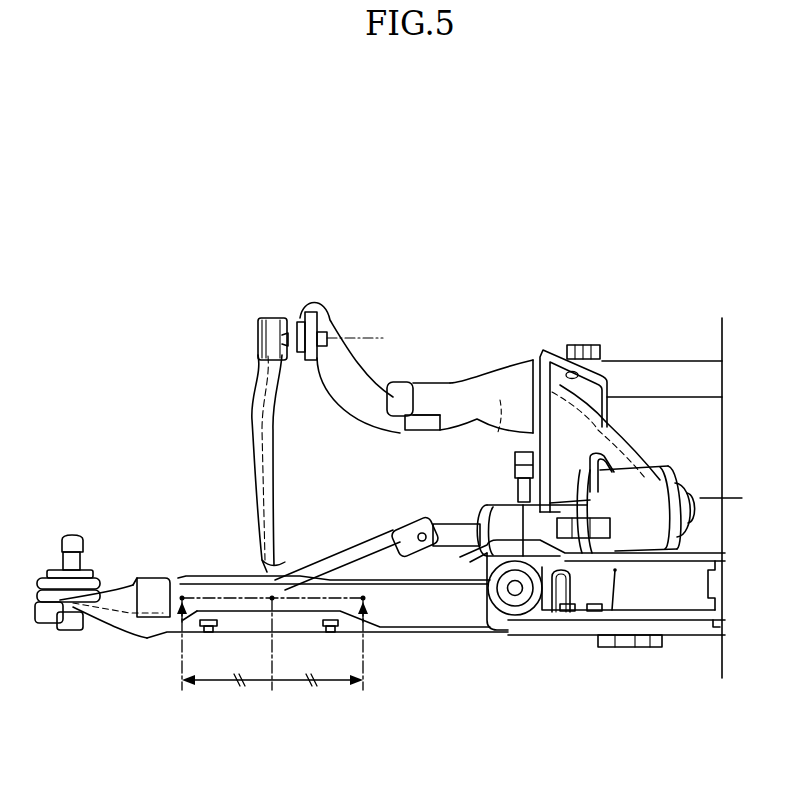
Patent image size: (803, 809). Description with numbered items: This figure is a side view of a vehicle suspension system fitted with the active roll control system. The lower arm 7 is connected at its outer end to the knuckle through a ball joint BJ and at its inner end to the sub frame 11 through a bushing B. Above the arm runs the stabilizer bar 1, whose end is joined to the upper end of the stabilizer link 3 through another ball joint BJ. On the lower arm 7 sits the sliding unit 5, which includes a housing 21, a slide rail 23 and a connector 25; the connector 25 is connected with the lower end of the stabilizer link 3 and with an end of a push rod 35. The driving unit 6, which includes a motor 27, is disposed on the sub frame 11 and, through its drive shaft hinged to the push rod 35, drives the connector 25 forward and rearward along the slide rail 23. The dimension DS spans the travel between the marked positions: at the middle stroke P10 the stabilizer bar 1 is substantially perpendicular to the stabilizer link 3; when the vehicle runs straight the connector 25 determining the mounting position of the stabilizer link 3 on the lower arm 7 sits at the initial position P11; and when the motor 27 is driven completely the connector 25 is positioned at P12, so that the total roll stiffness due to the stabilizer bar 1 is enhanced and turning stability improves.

The stabilizer bar 1 is at (660, 361).
The motor 27 is at (648, 483).
The driving unit 6 is at (703, 496).
The ball joint BJ is at (270, 338).
The stabilizer link 3 is at (258, 425).
The push rod 35 is at (367, 543).
The connector 25 is at (285, 562).
The housing 21 is at (173, 582).
The slide rail 23 is at (202, 575).
The lower arm 7 is at (395, 603).
The sliding unit 5 is at (166, 654).
The bushing B is at (506, 603).
The sub frame 11 is at (681, 616).
The distance DS is at (290, 683).
The position P12 is at (185, 659).
The initial position P11 is at (365, 659).
The middle stroke P10 is at (272, 690).